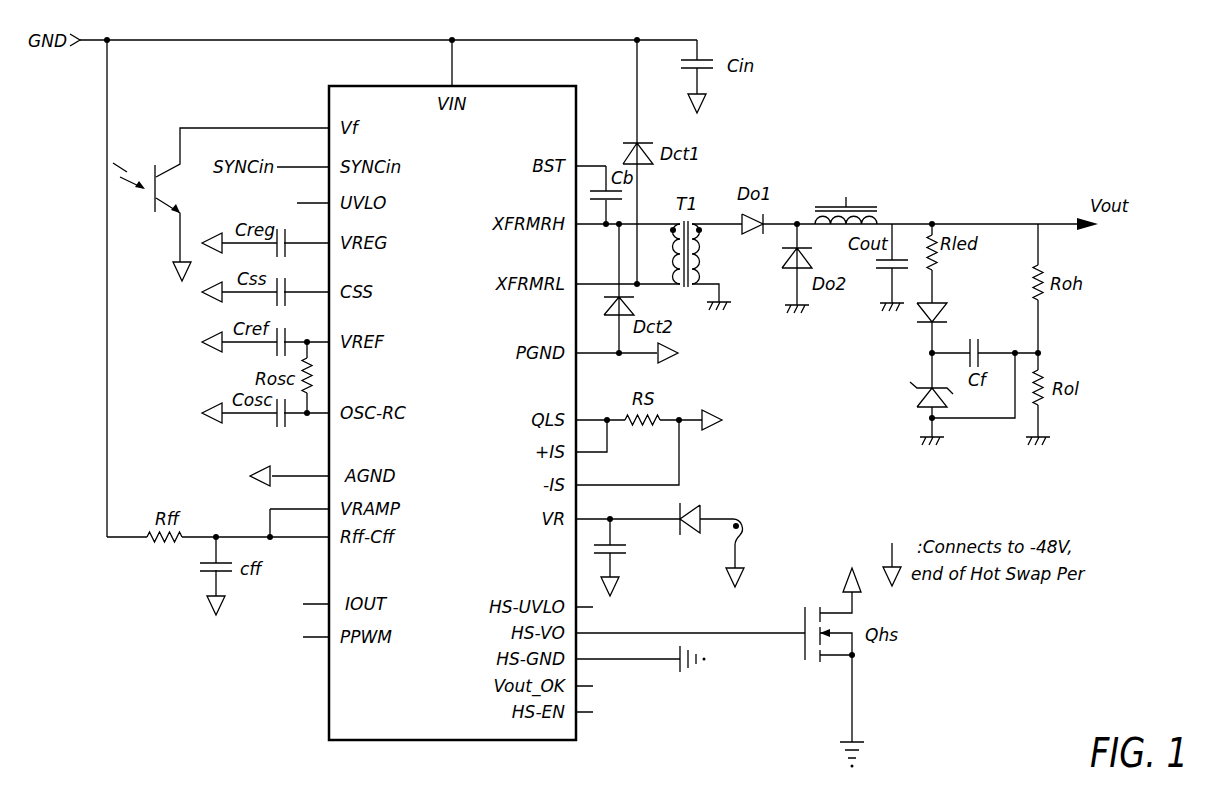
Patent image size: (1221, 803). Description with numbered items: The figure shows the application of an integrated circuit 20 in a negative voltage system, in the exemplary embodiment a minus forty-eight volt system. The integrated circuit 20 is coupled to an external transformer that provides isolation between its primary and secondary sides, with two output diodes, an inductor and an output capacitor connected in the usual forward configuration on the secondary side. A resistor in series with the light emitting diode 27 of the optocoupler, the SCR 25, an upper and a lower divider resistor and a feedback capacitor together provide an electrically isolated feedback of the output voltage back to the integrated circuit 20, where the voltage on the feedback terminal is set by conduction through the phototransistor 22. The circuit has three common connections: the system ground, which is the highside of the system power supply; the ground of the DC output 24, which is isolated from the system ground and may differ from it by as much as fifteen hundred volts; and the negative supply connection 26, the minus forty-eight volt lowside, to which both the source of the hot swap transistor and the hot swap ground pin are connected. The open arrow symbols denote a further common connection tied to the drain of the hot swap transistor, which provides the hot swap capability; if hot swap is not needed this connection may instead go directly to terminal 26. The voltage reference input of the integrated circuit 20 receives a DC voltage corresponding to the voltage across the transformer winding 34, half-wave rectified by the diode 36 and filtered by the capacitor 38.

The integrated circuit 20 is at (517, 70).
The phototransistor 22 is at (172, 162).
The ground of the DC output 24 is at (924, 440).
The SCR 25 is at (922, 394).
The negative supply connection 26 is at (678, 668).
The light emitting diode 27 is at (924, 312).
The transformer winding 34 is at (739, 538).
The diode 36 is at (690, 513).
The capacitor 38 is at (622, 556).